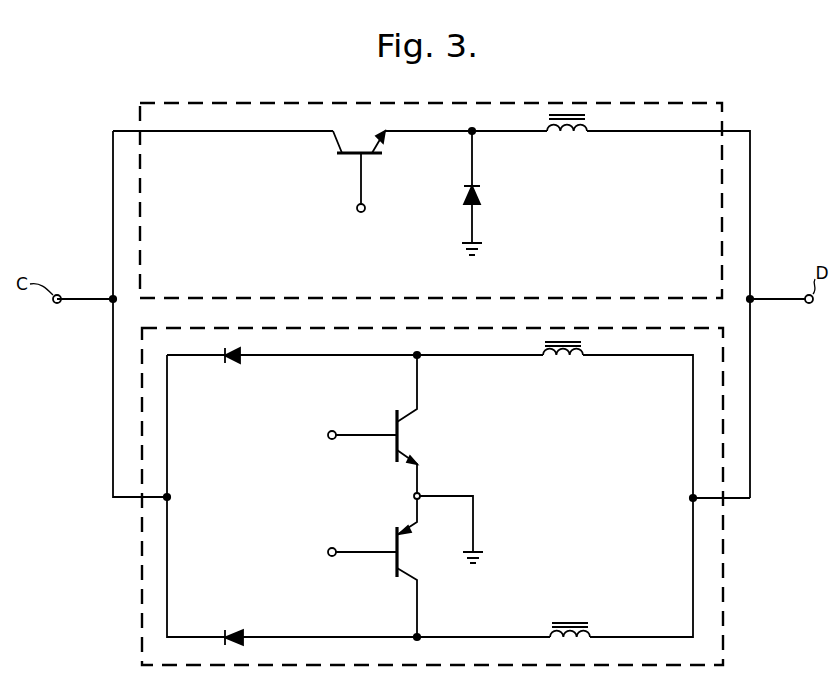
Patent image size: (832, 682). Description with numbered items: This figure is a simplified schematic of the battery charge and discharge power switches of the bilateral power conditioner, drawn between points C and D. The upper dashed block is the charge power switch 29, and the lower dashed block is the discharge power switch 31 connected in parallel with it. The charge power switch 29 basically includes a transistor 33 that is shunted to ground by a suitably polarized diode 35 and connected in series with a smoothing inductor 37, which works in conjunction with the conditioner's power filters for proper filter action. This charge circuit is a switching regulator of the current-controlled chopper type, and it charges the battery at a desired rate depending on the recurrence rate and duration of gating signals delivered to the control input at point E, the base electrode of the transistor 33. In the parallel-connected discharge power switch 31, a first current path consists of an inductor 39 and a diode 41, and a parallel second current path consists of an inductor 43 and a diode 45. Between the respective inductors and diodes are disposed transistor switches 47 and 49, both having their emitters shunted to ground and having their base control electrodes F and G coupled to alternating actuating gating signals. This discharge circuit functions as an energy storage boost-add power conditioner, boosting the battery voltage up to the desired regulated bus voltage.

The charge power switch 29 is at (709, 97).
The discharge power switch 31 is at (133, 560).
The transistor 33 is at (353, 157).
The diode 35 is at (475, 196).
The smoothing inductor 37 is at (571, 134).
The inductor 39 is at (565, 357).
The diode 41 is at (231, 365).
The inductor 43 is at (573, 629).
The diode 45 is at (238, 631).
The transistor switch 47 is at (399, 424).
The transistor switch 49 is at (400, 551).